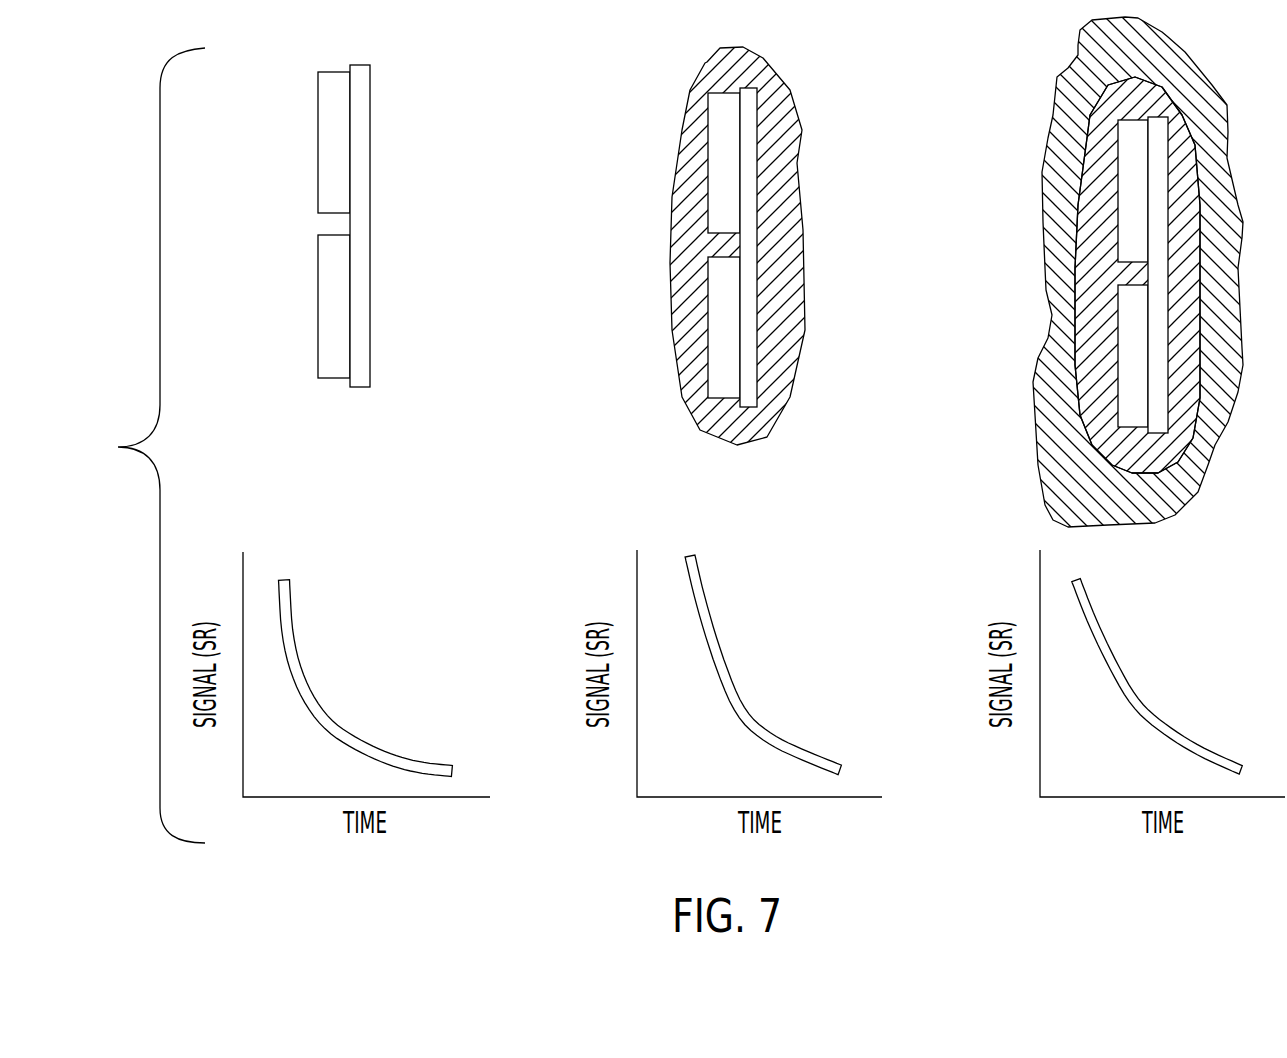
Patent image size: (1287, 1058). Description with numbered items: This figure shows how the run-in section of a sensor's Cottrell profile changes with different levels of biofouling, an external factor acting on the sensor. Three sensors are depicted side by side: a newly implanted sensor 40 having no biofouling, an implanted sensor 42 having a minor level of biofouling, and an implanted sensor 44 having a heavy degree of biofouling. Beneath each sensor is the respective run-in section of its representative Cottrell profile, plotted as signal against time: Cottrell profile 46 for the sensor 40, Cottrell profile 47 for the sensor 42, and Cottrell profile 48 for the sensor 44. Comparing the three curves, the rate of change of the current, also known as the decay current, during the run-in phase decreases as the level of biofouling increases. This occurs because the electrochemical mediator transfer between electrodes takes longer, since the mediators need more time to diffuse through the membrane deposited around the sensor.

The newly implanted sensor 40 is at (318, 259).
The implanted sensor 42 is at (717, 175).
The implanted sensor 44 is at (1130, 193).
The Cottrell profile 46 is at (297, 628).
The Cottrell profile 47 is at (711, 628).
The Cottrell profile 48 is at (1104, 628).